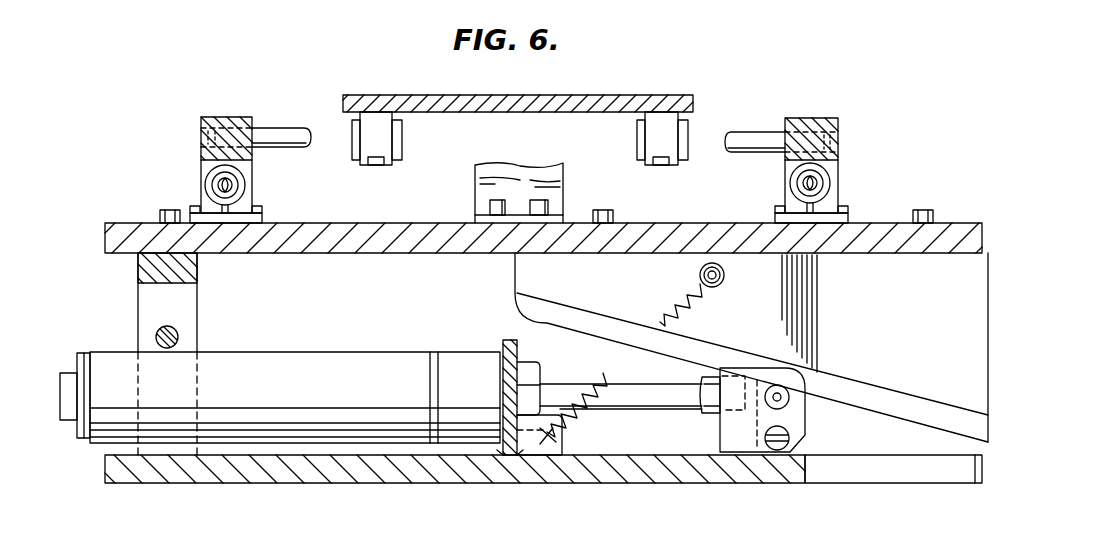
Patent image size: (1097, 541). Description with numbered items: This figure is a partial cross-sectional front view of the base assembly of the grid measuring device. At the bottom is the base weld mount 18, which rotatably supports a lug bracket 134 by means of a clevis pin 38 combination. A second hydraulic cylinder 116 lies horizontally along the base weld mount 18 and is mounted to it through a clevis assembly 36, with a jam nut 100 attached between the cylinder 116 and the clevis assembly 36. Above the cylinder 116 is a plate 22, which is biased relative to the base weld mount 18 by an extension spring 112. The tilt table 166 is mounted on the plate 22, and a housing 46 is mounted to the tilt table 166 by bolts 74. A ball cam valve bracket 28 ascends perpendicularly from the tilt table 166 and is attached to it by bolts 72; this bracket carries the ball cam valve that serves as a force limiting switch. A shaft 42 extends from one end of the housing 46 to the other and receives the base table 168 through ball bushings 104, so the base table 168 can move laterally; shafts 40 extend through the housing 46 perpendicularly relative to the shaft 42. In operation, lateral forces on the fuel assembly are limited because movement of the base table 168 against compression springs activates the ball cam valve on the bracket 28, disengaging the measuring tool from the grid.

The base weld mount 18 is at (450, 480).
The plate 22 is at (975, 325).
The ball cam valve bracket 28 is at (523, 182).
The clevis assembly 36 is at (805, 420).
The clevis pin 38 is at (170, 327).
The shafts 40 is at (812, 184).
The shaft 42 is at (282, 130).
The housing 46 is at (220, 120).
The bolts 72 is at (532, 200).
The bolts 74 is at (175, 210).
The jam nut 100 is at (708, 413).
The ball bushings 104 is at (355, 158).
The extension spring 112 is at (590, 375).
The second hydraulic cylinder 116 is at (307, 365).
The lug bracket 134 is at (195, 277).
The tilt table 166 is at (388, 228).
The base table 168 is at (611, 98).